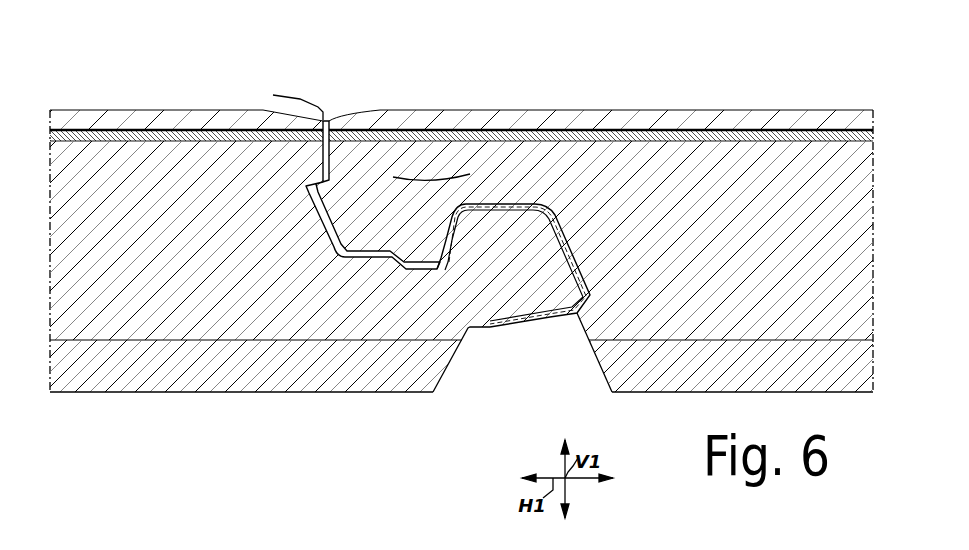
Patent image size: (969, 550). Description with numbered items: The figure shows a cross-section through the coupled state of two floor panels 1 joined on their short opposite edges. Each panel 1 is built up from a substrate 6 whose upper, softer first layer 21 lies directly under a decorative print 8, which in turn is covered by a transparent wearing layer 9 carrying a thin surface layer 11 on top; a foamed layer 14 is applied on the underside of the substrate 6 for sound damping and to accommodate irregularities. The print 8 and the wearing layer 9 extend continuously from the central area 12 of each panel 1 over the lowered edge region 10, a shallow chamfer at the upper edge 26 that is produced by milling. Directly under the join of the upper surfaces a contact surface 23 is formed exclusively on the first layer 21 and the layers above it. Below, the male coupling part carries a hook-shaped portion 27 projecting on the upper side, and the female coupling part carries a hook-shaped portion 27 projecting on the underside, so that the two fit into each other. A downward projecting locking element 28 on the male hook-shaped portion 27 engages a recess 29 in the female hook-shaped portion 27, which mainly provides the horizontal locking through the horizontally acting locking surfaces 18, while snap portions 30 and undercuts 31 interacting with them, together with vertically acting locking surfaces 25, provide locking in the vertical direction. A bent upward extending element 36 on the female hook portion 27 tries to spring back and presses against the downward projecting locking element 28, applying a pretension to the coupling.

The coated panel 1 is at (461, 221).
The substrate 6 is at (461, 287).
The print 8 is at (461, 103).
The transparent wearing layer 9 is at (563, 96).
The lowered edge region 10 is at (318, 82).
The surface layer 11 is at (251, 86).
The central area 12 is at (785, 85).
The foamed layer 14 is at (461, 382).
The horizontally acting locking surfaces 18 is at (522, 354).
The first layer 21 is at (461, 103).
The contact surface 23 is at (243, 104).
The vertically acting locking surfaces 25 is at (244, 112).
The upper edge 26 is at (373, 137).
The hook-shaped portion 27 is at (386, 242).
The downward projecting locking element 28 is at (538, 145).
The recess 29 is at (272, 361).
The snap portion 30 is at (324, 320).
The undercut 31 is at (438, 211).
The upward extending element 36 is at (534, 194).